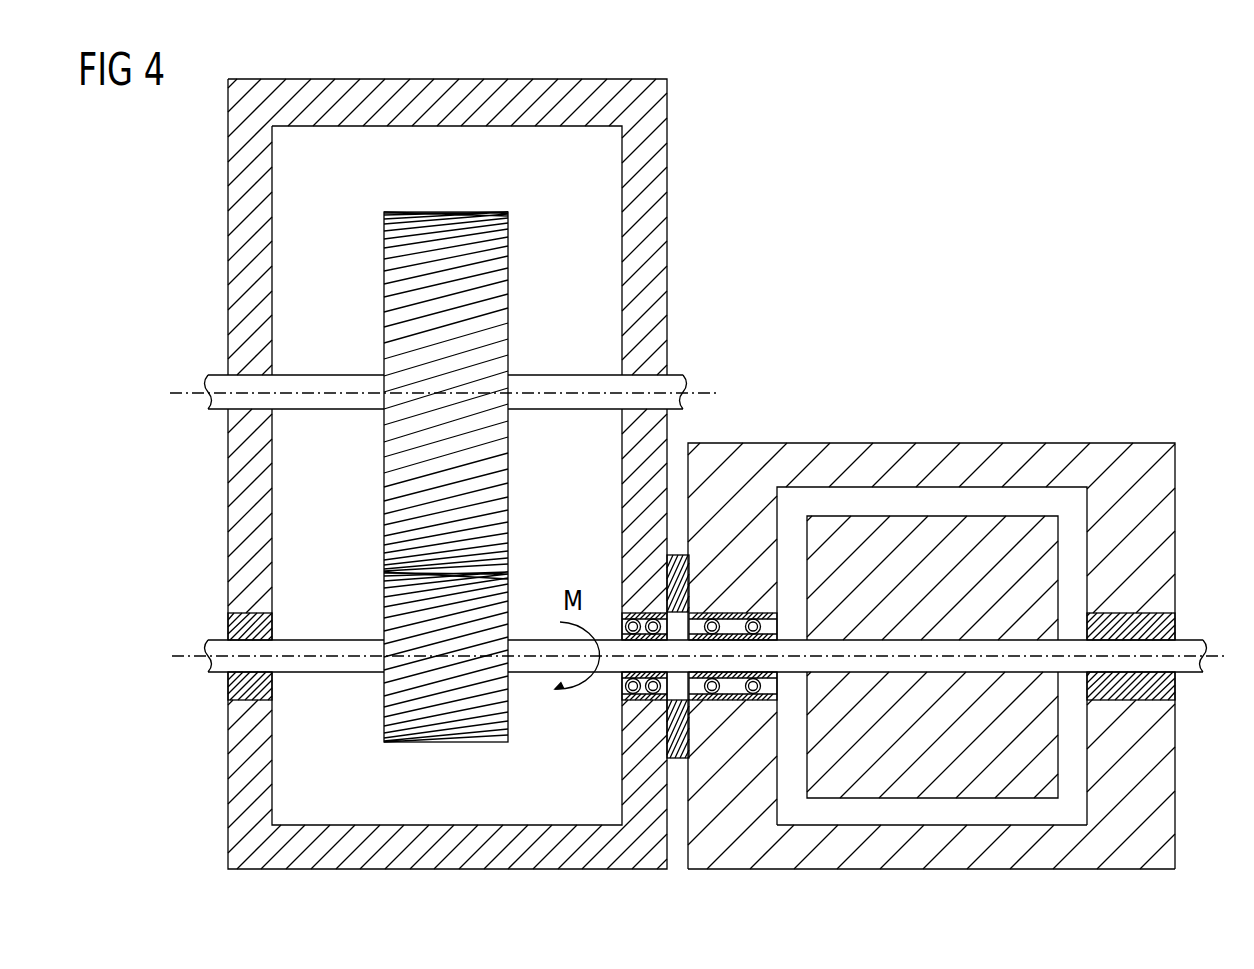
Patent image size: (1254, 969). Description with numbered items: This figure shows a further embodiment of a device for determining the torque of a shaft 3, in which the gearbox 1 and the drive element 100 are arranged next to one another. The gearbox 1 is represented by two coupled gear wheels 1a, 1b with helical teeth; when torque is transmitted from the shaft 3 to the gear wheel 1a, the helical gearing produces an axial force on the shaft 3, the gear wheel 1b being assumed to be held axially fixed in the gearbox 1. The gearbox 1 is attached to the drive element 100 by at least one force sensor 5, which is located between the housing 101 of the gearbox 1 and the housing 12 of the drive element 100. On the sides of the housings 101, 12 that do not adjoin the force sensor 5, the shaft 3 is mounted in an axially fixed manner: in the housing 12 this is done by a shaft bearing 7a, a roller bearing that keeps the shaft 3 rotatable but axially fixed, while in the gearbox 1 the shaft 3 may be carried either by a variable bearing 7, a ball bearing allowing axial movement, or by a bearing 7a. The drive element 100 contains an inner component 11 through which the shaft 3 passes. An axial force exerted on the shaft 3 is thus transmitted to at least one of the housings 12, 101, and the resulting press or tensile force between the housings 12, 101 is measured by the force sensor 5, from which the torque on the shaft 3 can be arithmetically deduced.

The gearbox 1 is at (471, 475).
The gear wheel 1a is at (443, 742).
The gear wheel 1b is at (443, 222).
The shaft 3 is at (218, 403).
The force sensor 5 is at (680, 760).
The variable bearing 7 is at (737, 611).
The shaft bearing 7a is at (243, 612).
The rotor 11 is at (868, 540).
The housing 12 is at (932, 855).
The drive element 100 is at (937, 434).
The housing 101 is at (447, 855).